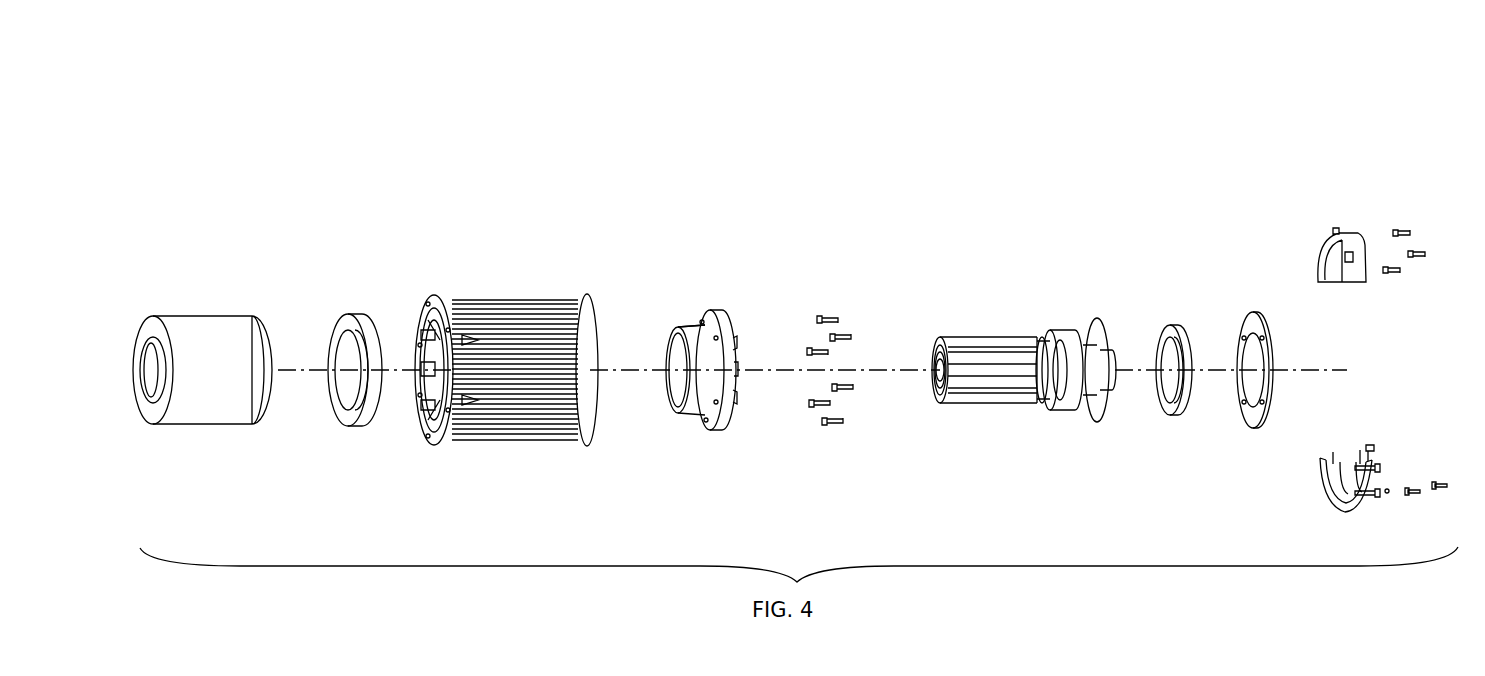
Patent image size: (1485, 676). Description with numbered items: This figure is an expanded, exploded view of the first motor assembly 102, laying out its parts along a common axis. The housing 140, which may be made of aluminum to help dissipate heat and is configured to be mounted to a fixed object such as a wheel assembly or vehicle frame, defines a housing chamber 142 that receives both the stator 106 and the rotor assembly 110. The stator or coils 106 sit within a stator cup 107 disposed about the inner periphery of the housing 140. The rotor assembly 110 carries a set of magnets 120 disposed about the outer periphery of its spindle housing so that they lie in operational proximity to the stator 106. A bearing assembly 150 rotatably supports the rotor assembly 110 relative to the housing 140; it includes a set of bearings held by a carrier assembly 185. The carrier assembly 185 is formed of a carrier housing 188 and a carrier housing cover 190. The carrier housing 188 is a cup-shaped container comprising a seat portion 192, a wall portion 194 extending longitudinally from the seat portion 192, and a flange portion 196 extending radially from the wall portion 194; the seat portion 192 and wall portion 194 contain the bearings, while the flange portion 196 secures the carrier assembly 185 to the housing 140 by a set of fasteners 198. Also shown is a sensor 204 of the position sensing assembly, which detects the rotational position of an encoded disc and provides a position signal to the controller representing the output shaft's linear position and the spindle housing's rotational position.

The first motor assembly 102 is at (1175, 137).
The stator 106 is at (202, 313).
The stator cup 107 is at (359, 313).
The rotor assembly 110 is at (1036, 374).
The set of magnets 120 is at (1000, 337).
The housing 140 is at (473, 351).
The housing chamber 142 is at (427, 396).
The bearing assembly 150 is at (1067, 410).
The carrier assembly 185 is at (697, 367).
The carrier housing 188 is at (688, 327).
The carrier housing cover 190 is at (1173, 323).
The seat portion 192 is at (671, 400).
The wall portion 194 is at (697, 402).
The flange portion 196 is at (727, 400).
The set of fasteners 198 is at (835, 315).
The sensor 204 is at (1280, 466).